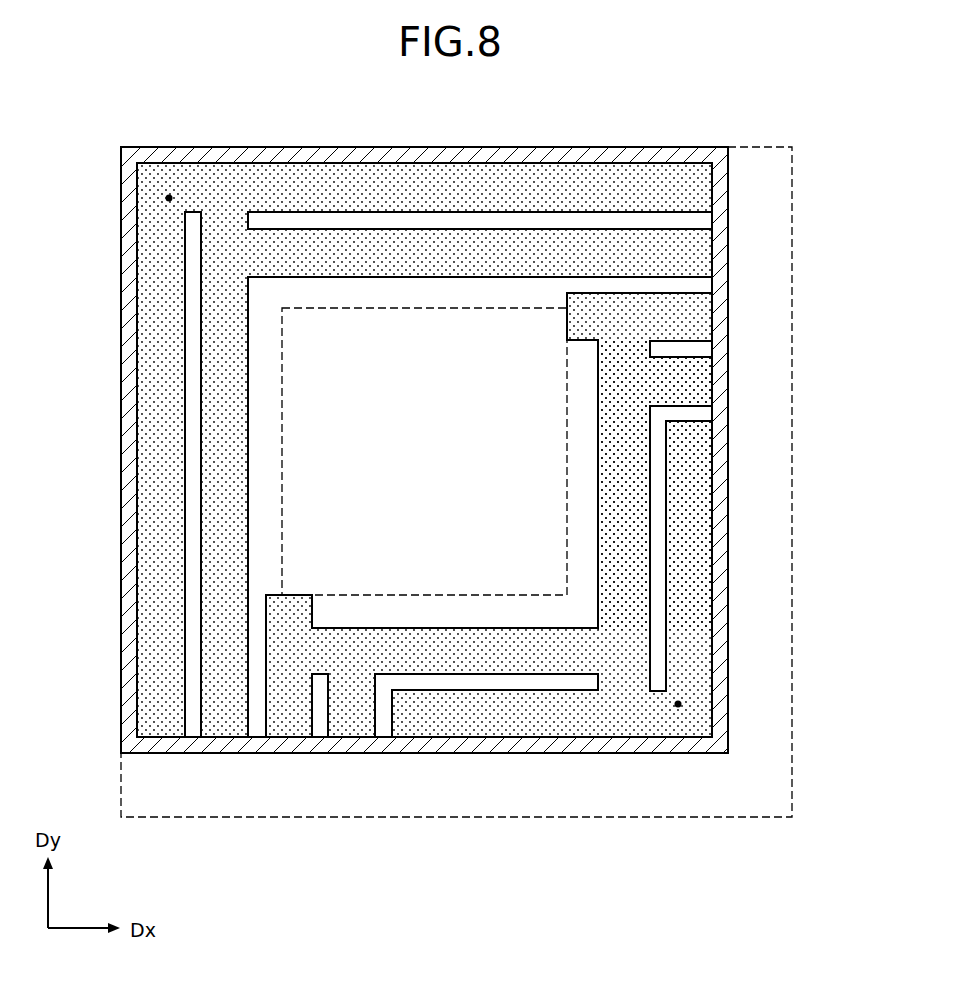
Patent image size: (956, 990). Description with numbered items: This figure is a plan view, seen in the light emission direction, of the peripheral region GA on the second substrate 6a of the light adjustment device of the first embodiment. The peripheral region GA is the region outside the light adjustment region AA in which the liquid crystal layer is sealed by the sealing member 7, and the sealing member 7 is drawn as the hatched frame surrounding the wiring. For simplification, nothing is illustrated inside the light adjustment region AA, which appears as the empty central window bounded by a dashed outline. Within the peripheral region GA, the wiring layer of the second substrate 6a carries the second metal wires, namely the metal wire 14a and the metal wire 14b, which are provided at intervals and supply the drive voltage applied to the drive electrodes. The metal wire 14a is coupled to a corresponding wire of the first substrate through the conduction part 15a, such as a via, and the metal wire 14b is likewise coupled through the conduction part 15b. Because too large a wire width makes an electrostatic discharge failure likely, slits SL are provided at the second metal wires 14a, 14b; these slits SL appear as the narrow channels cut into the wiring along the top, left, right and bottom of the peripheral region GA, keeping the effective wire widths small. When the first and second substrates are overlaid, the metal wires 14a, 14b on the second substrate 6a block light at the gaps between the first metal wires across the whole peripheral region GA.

The second substrate 6a is at (248, 147).
The sealing member 7 is at (512, 753).
The metal wire 14a is at (478, 245).
The metal wire 14b is at (620, 605).
The conduction part 15a is at (169, 195).
The conduction part 15b is at (682, 704).
The peripheral region GA is at (624, 147).
The slit SL is at (703, 221).
The light adjustment region AA is at (532, 467).